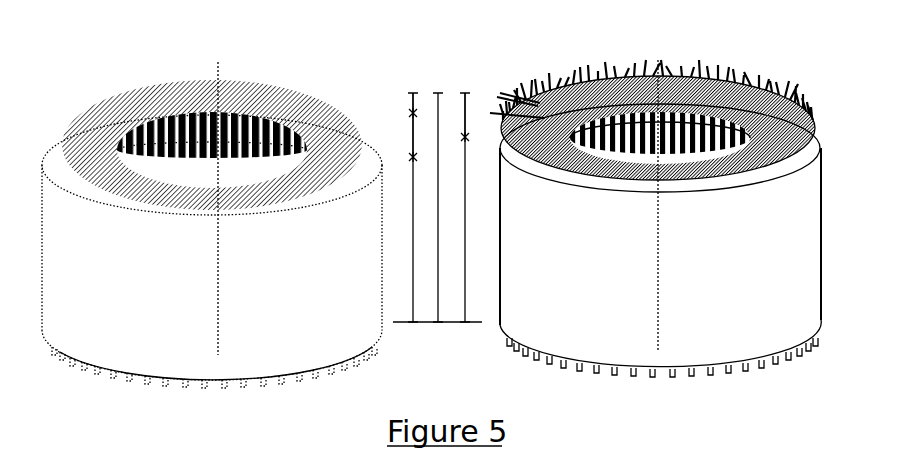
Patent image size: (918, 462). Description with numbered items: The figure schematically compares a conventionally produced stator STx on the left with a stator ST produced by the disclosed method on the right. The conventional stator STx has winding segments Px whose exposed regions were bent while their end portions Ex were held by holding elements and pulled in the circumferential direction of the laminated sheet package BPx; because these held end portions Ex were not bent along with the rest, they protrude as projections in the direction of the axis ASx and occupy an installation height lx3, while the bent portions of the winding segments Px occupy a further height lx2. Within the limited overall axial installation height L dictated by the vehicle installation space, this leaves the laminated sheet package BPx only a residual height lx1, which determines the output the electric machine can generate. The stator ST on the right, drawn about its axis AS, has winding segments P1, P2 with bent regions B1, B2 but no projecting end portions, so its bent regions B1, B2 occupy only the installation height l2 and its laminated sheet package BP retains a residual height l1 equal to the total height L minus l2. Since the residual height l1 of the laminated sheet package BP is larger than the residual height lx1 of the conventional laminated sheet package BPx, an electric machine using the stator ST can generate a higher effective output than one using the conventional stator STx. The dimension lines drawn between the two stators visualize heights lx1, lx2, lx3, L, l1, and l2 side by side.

The stator STx is at (218, 199).
The end portions Ex is at (283, 94).
The slots of comparison stator Sx is at (297, 190).
The winding segments Px is at (296, 195).
The axis ASx is at (218, 290).
The laminated sheet package BPx is at (327, 320).
The residual installation height lx1 is at (437, 207).
The installation height of the bent portions lx2 is at (404, 135).
The installation height of the projecting end portions lx3 is at (406, 105).
The axial installation height L is at (440, 207).
The residual installation height l1 is at (469, 207).
The installation height of the bent regions l2 is at (472, 115).
The stator ST is at (656, 195).
The bent region B1 is at (755, 180).
The winding segments P1 is at (735, 182).
The bent region B2 is at (630, 75).
The winding segments P2 is at (608, 72).
The axis AS is at (660, 290).
The laminated sheet package BP is at (760, 313).